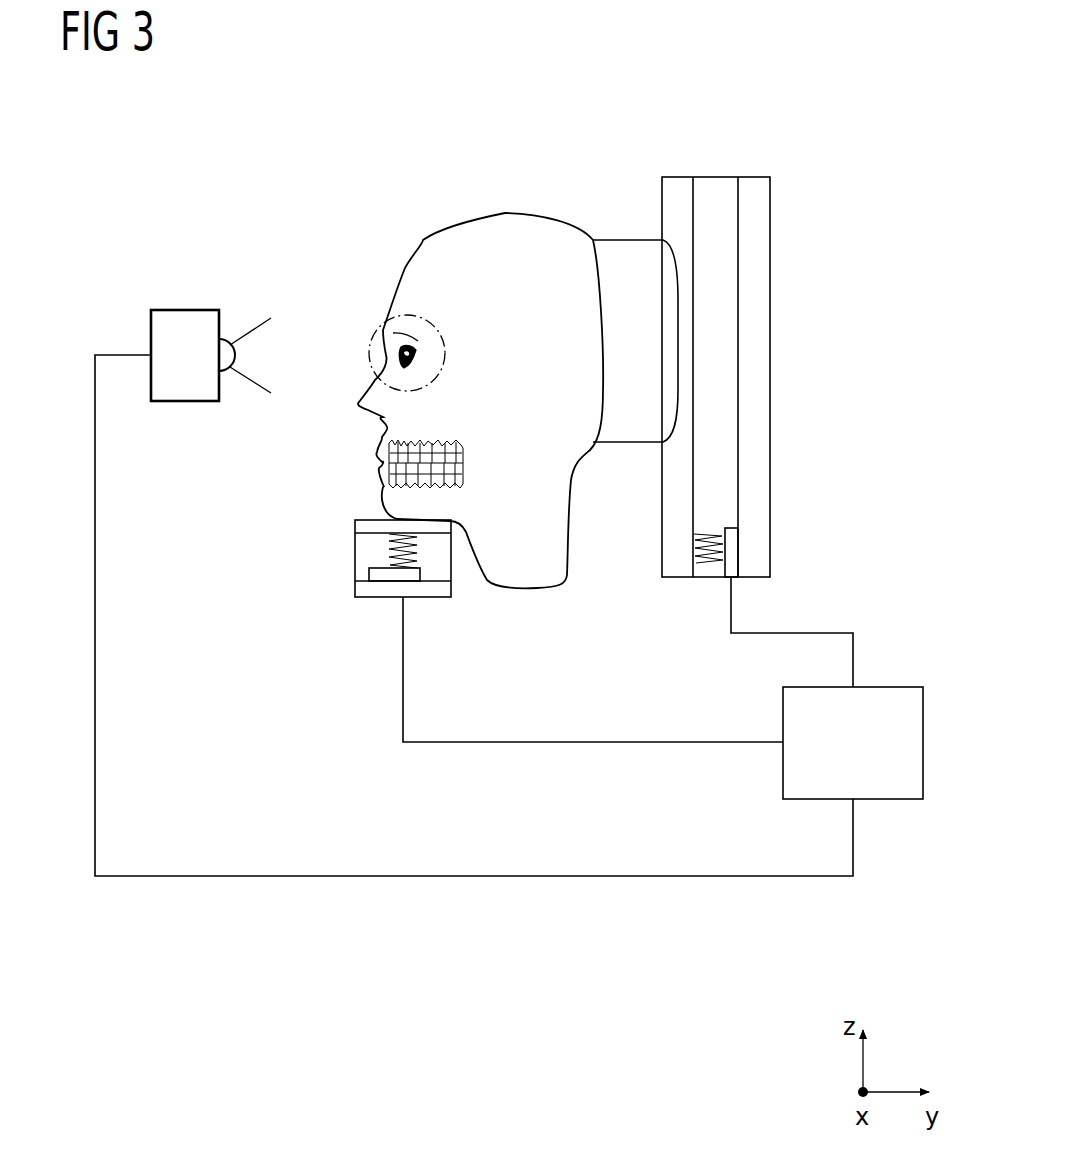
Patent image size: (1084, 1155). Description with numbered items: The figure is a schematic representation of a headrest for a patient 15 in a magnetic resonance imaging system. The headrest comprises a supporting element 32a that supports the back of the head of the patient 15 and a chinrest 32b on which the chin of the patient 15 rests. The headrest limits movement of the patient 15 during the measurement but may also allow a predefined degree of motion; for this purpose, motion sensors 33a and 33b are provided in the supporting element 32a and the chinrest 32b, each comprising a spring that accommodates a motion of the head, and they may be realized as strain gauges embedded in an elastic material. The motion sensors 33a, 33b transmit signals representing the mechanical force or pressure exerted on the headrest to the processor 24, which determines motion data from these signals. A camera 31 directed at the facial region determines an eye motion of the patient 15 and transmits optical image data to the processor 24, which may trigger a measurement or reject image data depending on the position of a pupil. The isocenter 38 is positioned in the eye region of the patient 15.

The patient 15 is at (505, 212).
The processor 24 is at (897, 687).
The camera 31 is at (186, 309).
The supporting element 32a is at (680, 176).
The chinrest 32b is at (353, 530).
The motion sensor 33a is at (722, 565).
The motion sensor 33b is at (368, 572).
The isocenter 38 is at (376, 334).